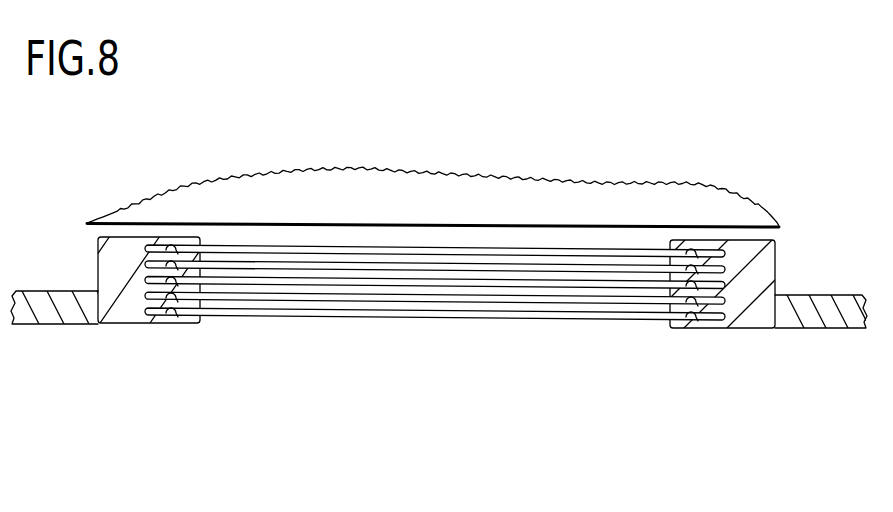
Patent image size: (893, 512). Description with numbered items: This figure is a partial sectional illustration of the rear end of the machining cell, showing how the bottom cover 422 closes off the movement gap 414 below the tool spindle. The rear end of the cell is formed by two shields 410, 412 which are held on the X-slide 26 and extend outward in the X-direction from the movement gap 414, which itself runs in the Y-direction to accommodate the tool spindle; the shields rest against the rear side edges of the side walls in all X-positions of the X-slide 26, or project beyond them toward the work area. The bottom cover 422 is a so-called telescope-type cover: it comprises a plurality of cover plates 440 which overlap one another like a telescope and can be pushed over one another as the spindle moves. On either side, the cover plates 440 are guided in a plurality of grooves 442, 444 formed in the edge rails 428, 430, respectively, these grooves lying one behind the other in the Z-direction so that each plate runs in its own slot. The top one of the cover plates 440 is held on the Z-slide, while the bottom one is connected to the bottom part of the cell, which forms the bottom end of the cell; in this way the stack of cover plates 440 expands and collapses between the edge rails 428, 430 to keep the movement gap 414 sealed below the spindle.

The X-slide 26 is at (735, 190).
The shield 410 is at (48, 326).
The shield 412 is at (834, 331).
The movement gap 414 is at (213, 329).
The bottom cover 422 is at (481, 328).
The edge rail 428 is at (115, 246).
The edge rail 430 is at (761, 277).
The cover plates 440 is at (380, 312).
The grooves 442 is at (170, 248).
The grooves 444 is at (693, 251).